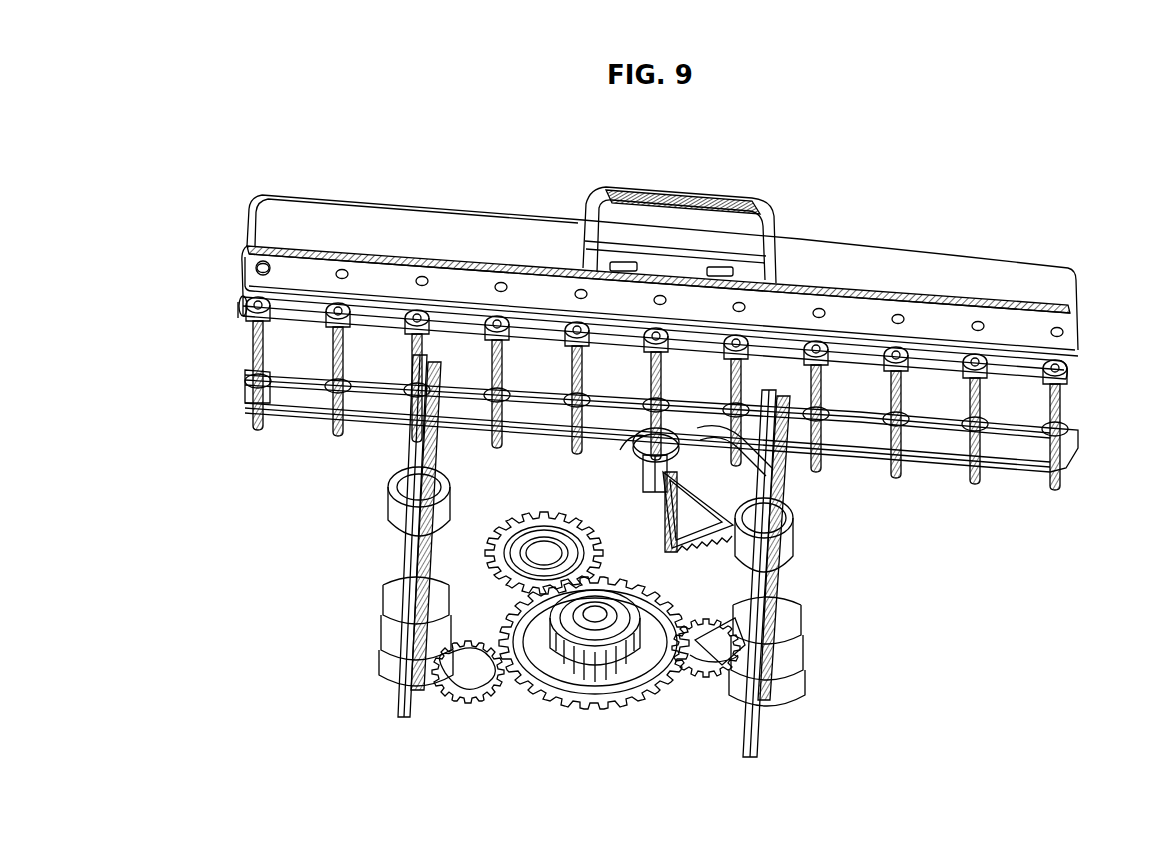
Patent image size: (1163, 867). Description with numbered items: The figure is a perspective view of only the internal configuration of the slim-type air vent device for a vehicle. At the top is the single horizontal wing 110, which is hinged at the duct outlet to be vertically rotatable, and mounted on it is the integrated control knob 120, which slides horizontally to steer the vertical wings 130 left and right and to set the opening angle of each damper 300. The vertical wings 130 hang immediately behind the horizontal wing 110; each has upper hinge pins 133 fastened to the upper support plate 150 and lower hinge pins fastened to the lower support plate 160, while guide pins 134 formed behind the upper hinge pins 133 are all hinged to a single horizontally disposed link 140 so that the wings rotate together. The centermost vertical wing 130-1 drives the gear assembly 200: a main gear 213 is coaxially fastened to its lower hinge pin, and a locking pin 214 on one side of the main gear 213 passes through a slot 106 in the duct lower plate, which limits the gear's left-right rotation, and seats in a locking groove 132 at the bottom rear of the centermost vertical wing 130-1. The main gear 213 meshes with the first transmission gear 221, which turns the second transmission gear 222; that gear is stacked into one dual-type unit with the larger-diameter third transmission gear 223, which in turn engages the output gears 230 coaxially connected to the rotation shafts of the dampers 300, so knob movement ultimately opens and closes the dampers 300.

The slot 106 is at (785, 487).
The single horizontal wing 110 is at (858, 246).
The integrated control knob 120 is at (722, 185).
The vertical wings 130 is at (1060, 478).
The centermost vertical wing 130-1 is at (628, 392).
The locking groove 132 is at (793, 525).
The upper hinge pins 133 is at (246, 254).
The guide pins 134 is at (243, 301).
The single link 140 is at (1068, 362).
The upper support plate 150 is at (1032, 320).
The lower support plate 160 is at (1002, 450).
The gear assembly 200 is at (575, 664).
The main gear 213 is at (661, 528).
The locking pin 214 is at (643, 470).
The first transmission gear 221 is at (603, 545).
The second transmission gear 222 is at (622, 714).
The third transmission gear 223 is at (654, 693).
The output gears 230 is at (462, 705).
The damper 300 is at (398, 706).